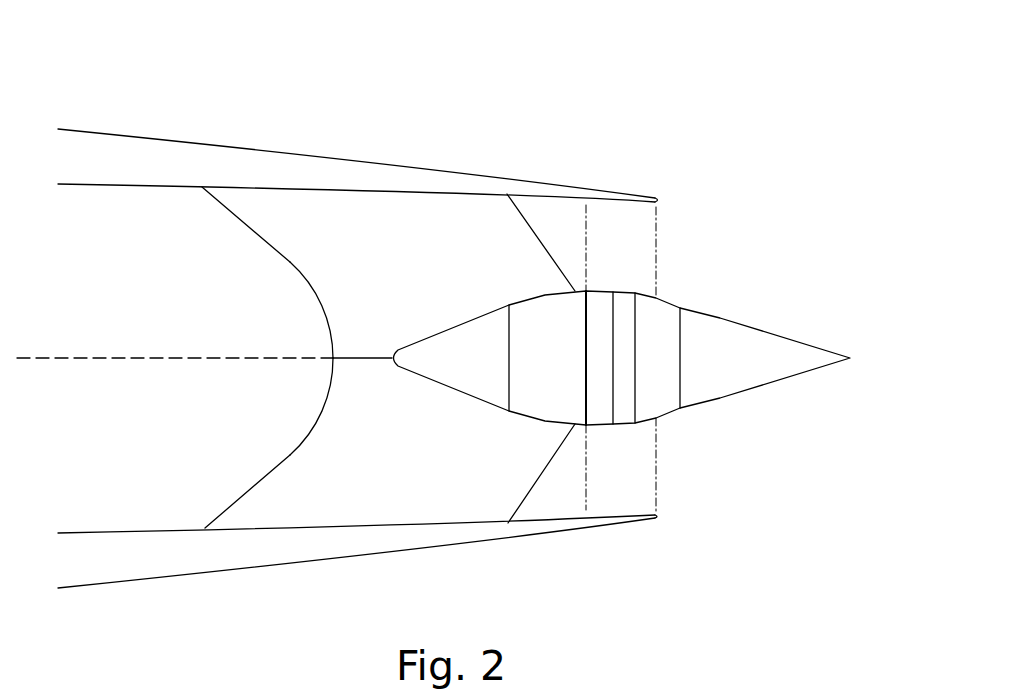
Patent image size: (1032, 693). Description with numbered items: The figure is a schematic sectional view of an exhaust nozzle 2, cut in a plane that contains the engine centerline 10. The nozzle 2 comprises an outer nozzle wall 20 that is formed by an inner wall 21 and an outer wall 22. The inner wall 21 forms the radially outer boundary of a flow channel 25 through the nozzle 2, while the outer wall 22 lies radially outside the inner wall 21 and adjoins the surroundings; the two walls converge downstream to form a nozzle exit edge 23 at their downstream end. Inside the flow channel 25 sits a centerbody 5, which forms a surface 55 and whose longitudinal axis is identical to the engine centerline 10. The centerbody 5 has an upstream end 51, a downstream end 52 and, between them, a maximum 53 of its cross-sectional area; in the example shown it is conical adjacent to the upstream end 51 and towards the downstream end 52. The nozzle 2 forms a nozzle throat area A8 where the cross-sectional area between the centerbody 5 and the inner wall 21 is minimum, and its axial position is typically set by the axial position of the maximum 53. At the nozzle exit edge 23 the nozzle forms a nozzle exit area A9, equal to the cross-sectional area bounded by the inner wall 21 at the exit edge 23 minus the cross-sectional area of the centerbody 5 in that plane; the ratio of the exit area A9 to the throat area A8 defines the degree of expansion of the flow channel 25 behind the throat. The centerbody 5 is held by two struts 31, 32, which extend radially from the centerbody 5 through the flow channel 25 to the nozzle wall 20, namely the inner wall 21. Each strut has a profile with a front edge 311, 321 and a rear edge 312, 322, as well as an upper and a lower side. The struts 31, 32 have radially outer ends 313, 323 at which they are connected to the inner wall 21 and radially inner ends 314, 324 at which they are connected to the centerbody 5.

The nozzle 2 is at (486, 135).
The centerbody 5 is at (750, 343).
The engine centerline 10 is at (80, 358).
The outer nozzle wall 20 is at (238, 134).
The inner wall 21 is at (113, 187).
The outer wall 22 is at (125, 136).
The nozzle exit edge 23 is at (662, 203).
The flow channel 25 is at (43, 302).
The strut 31 is at (282, 240).
The strut 32 is at (289, 470).
The upstream end 51 is at (390, 370).
The downstream end 52 is at (860, 362).
The maximum 53 is at (588, 290).
The surface 55 is at (713, 402).
The front edge 311 is at (238, 218).
The rear edge 312 is at (544, 250).
The radially outer end 313 is at (388, 178).
The radially inner end 314 is at (488, 330).
The front edge 321 is at (248, 490).
The rear edge 322 is at (547, 465).
The radially outer end 323 is at (377, 537).
The radially inner end 324 is at (453, 371).
The nozzle throat area A8 is at (590, 233).
The nozzle exit area A9 is at (658, 258).